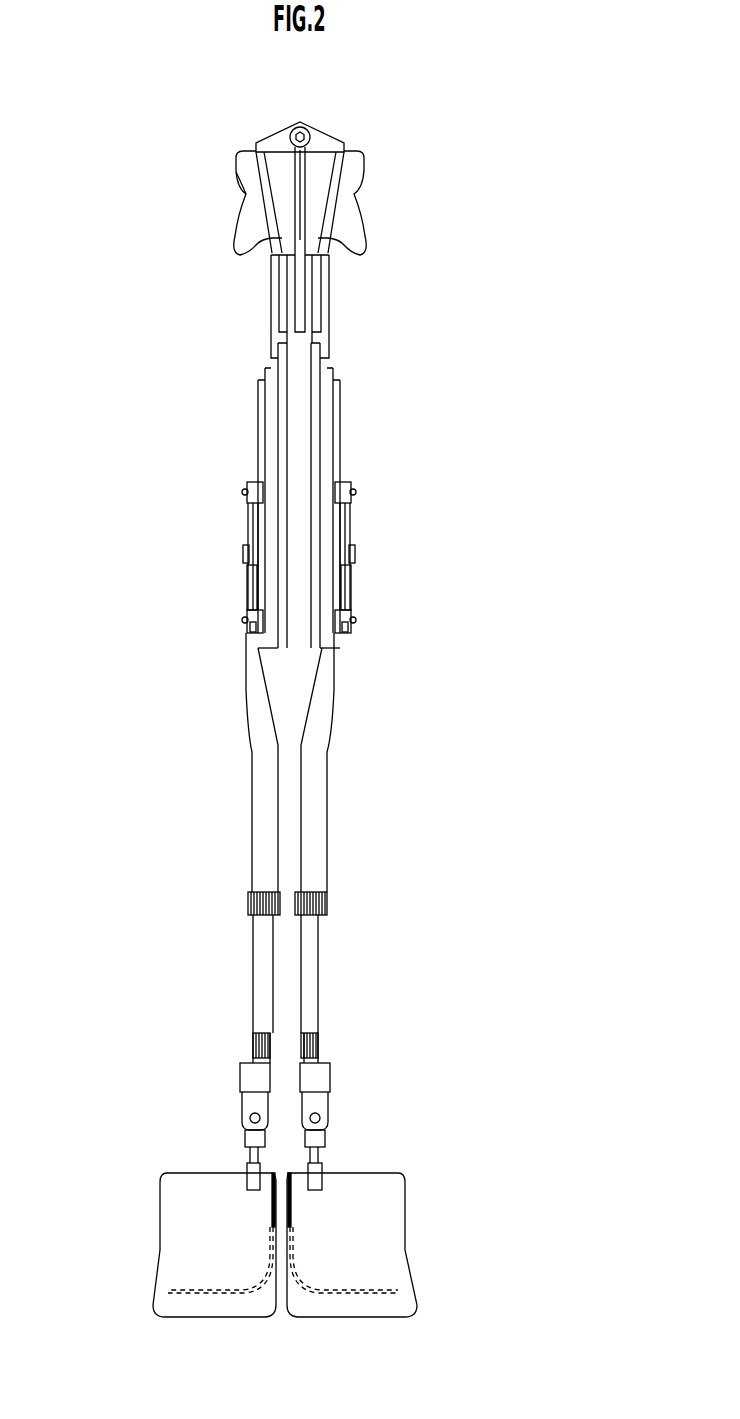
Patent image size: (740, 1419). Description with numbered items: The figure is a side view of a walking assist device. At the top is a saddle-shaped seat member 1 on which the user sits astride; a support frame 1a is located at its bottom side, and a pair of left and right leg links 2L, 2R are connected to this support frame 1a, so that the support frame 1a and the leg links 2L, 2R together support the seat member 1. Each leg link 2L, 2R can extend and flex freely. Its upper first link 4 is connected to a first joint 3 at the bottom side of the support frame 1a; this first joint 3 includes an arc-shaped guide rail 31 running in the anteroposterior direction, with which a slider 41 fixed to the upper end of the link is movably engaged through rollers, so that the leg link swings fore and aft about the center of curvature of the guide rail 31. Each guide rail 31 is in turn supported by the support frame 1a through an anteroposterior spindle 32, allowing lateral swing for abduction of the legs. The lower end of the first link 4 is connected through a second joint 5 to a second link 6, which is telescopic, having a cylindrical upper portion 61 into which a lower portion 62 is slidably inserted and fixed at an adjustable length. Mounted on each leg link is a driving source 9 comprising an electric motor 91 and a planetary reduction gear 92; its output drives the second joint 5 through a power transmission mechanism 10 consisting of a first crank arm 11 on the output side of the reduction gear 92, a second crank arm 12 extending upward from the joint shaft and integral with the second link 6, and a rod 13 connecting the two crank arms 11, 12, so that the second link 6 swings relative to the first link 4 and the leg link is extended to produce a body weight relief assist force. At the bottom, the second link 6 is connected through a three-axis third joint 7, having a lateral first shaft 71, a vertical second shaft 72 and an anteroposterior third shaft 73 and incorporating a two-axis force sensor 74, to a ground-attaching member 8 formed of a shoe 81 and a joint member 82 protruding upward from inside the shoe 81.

The seat member 1 is at (240, 167).
The support frame 1a is at (348, 187).
The first joint 3 is at (276, 129).
The guide rail 31 is at (305, 200).
The spindle 32 is at (300, 126).
The slider 41 is at (271, 328).
The first link 4 is at (278, 392).
The right leg link 2R is at (210, 416).
The left leg link 2L is at (385, 415).
The driving source 9 is at (238, 477).
The electric motor 91 is at (258, 440).
The reduction gear 92 is at (246, 556).
The power transmission mechanism 10 is at (230, 518).
The first crank arm 11 is at (250, 492).
The second crank arm 12 is at (247, 632).
The rod 13 is at (250, 570).
The second joint 5 is at (244, 650).
The second link 6 is at (178, 870).
The upper portion 61 is at (262, 887).
The lower portion 62 is at (262, 945).
The third joint 7 is at (227, 1102).
The first shaft 71 is at (249, 1172).
The second shaft 72 is at (247, 1150).
The third shaft 73 is at (244, 1112).
The two-axis force sensor 74 is at (240, 1068).
The ground-attaching member 8 is at (278, 1246).
The shoe 81 is at (160, 1248).
The joint member 82 is at (270, 1212).